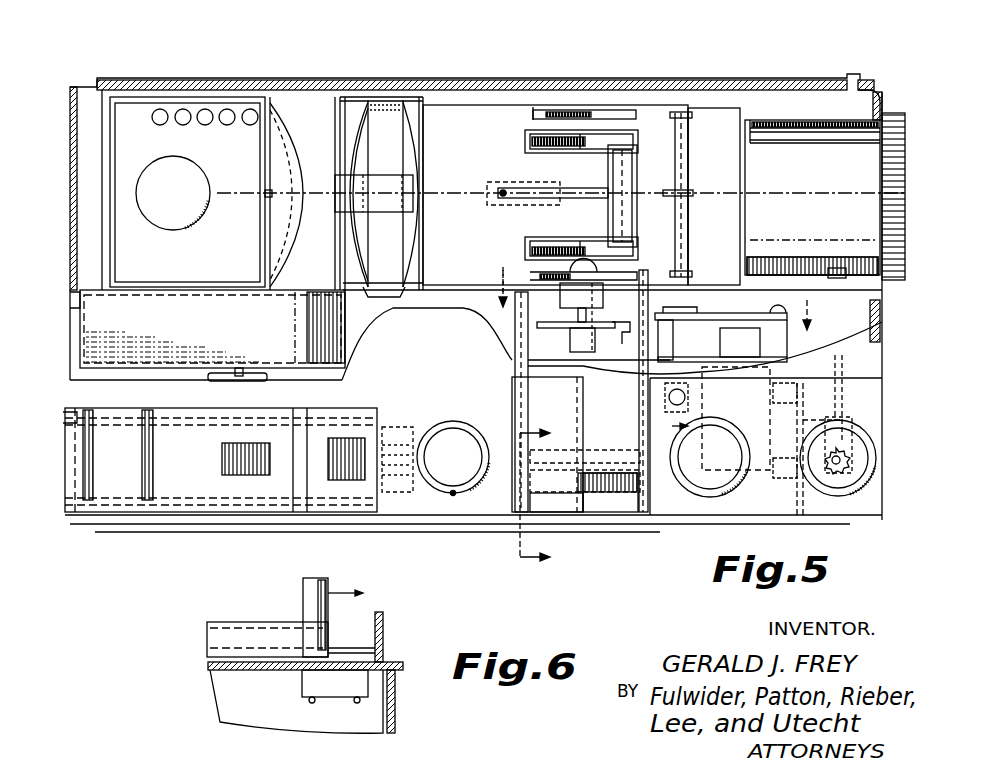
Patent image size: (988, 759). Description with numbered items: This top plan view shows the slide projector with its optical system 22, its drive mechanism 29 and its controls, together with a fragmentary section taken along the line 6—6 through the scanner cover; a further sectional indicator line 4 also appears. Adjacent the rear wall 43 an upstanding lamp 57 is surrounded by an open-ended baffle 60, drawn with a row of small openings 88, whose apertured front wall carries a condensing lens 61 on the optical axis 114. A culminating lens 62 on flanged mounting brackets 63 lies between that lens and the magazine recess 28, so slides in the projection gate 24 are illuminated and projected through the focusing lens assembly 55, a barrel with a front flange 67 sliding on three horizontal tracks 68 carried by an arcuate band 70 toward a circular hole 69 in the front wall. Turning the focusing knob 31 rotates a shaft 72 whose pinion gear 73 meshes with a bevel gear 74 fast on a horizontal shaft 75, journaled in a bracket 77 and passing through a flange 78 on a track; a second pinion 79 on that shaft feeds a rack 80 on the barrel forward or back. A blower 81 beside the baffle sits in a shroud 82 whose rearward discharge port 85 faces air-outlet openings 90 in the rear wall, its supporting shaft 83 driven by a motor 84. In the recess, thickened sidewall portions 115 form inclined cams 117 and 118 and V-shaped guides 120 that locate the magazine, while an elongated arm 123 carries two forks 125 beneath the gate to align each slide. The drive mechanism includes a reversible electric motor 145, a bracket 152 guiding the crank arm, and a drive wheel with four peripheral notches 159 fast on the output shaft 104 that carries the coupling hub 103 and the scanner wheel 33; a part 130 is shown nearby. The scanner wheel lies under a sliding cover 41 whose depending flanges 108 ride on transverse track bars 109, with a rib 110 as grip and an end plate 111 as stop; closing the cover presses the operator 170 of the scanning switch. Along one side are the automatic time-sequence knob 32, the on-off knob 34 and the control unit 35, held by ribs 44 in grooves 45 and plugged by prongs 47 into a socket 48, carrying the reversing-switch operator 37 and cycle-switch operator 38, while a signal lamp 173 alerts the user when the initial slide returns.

In FIG. 5, the optical system 22 is at (398, 74).
In FIG. 5, the rear wall 43 is at (70, 212).
In FIG. 5, the circular hole 69 is at (876, 92).
In FIG. 5, the flange 67 is at (891, 113).
In FIG. 5, the horizontal shaft 75 is at (876, 294).
In FIG. 5, the flange 78 is at (870, 298).
In FIG. 5, the baffle 60 is at (120, 158).
In FIG. 5, the cartridge openings 88 is at (160, 108).
In FIG. 5, the lamp 57 is at (194, 172).
In FIG. 5, the condensing lens 61 is at (280, 138).
In FIG. 5, the blower 81 is at (292, 292).
In FIG. 5, the culminating lens 62 is at (412, 141).
In FIG. 5, the flanged mounting brackets 63 is at (392, 200).
In FIG. 5, the projection gate 24 is at (642, 108).
In FIG. 5, the cam 117 is at (578, 110).
In FIG. 5, the forks 125 is at (597, 140).
In FIG. 5, the lower central portion of recess sidewall 115 is at (532, 116).
In FIG. 5, the cam 118 is at (530, 272).
In FIG. 5, the elongated arm 123 is at (610, 206).
In FIG. 5, the optical axis 114 is at (438, 192).
In FIG. 5, the V-shaped guides 120 is at (635, 110).
In FIG. 5, the magazine recess 28 is at (708, 110).
In FIG. 5, the arcuate band 70 is at (745, 188).
In FIG. 5, the horizontal tracks 68 is at (758, 127).
In FIG. 5, the focusing lens assembly 55 is at (821, 205).
In FIG. 5, the rack 80 is at (760, 260).
In FIG. 5, the second pinion 79 is at (833, 263).
In FIG. 5, the shroud 82 is at (148, 317).
In FIG. 5, the air-outlet openings 90 is at (70, 317).
In FIG. 5, the radial discharge port 85 is at (77, 287).
In FIG. 5, the supporting shaft 83 is at (238, 368).
In FIG. 5, the motor 84 is at (247, 383).
In FIG. 5, the transverse track bars 109 is at (517, 330).
In FIG. 5, the section line 4 is at (649, 307).
In FIG. 5, the coupling hub 103 is at (566, 297).
In FIG. 5, the horizontal shaft 104 is at (588, 317).
In FIG. 5, the peripheral notches 159 is at (560, 328).
In FIG. 5, the depending flanges 108 is at (512, 397).
In FIG. 5, the signal lamp 173 is at (572, 444).
In FIG. 5, the bracket 152 is at (650, 370).
In FIG. 5, the end plate 111 is at (645, 515).
In FIG. 6, the end plate 111 is at (385, 620).
In FIG. 5, the rib 110 is at (573, 500).
In FIG. 6, the rib 110 is at (325, 577).
In FIG. 5, the sliding cover 41 is at (553, 483).
In FIG. 6, the sliding cover 41 is at (258, 622).
In FIG. 5, the section line 6 is at (543, 498).
In FIG. 5, the control unit 35 is at (207, 515).
In FIG. 5, the elongated ribs 44 is at (68, 413).
In FIG. 5, the longitudinal grooves 45 is at (148, 490).
In FIG. 5, the reversing-switch operator 37 is at (260, 443).
In FIG. 5, the cycle-switch operator 38 is at (345, 443).
In FIG. 5, the socket 48 is at (385, 500).
In FIG. 5, the on-off knob 34 is at (428, 428).
In FIG. 5, the prongs 47 is at (420, 452).
In FIG. 5, the reversible indexing drive mechanism 29 is at (770, 343).
In FIG. 5, the circuit board 130 is at (710, 313).
In FIG. 5, the reversible electric motor 145 is at (728, 368).
In FIG. 5, the scanner wheel 33 is at (678, 447).
In FIG. 5, the automatic time-sequence knob 32 is at (715, 490).
In FIG. 5, the focusing knob 31 is at (807, 487).
In FIG. 5, the bracket 77 is at (840, 395).
In FIG. 5, the pinion gear 73 is at (867, 487).
In FIG. 5, the bevel gear 74 is at (863, 427).
In FIG. 5, the shaft 72 is at (850, 455).
In FIG. 6, the operator 170 is at (305, 673).